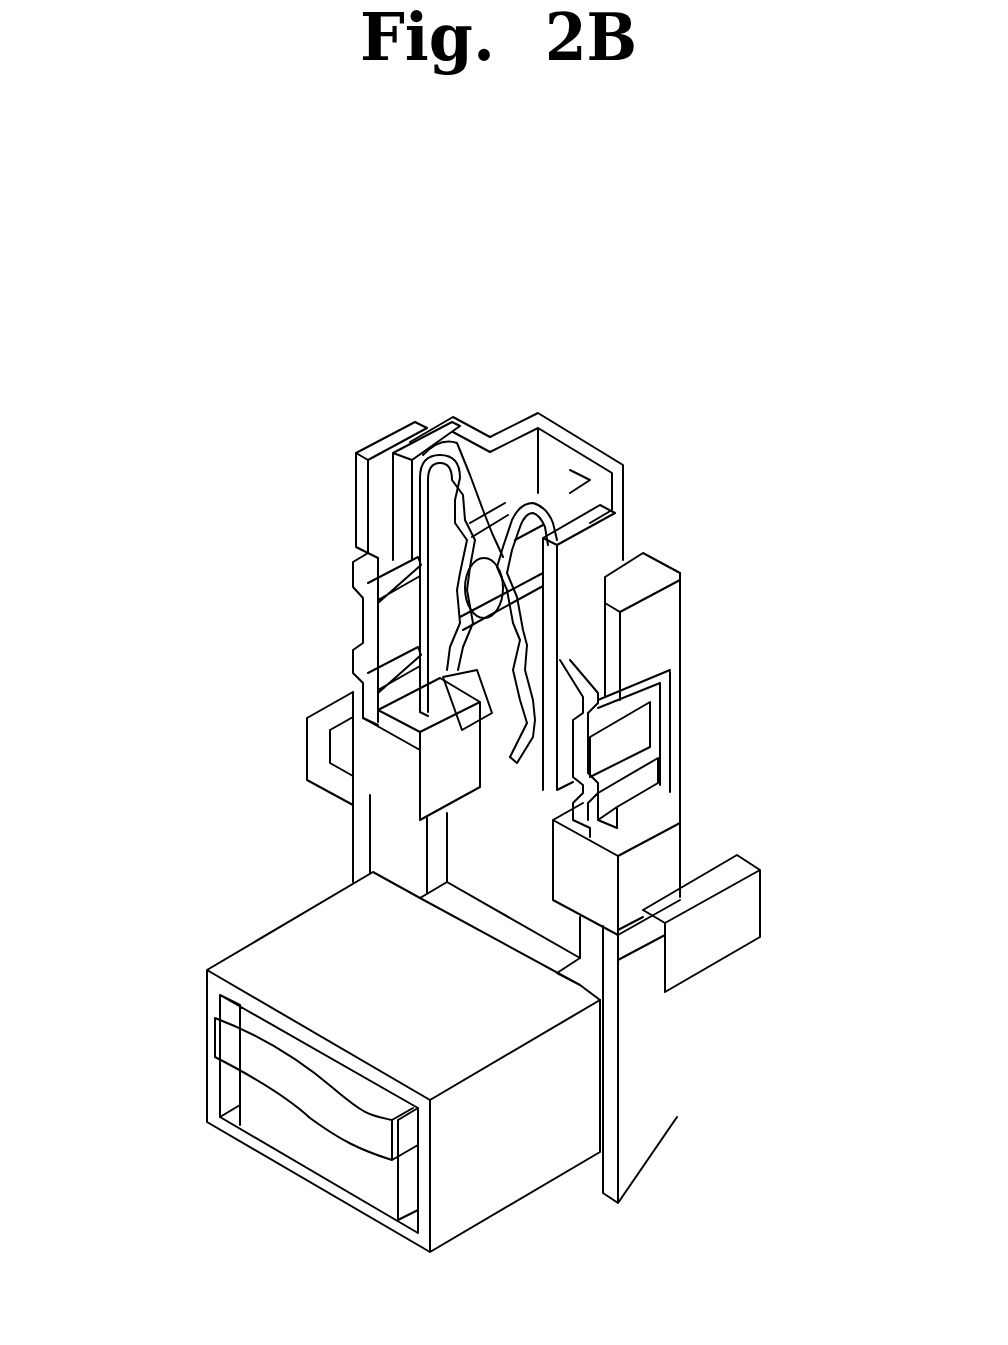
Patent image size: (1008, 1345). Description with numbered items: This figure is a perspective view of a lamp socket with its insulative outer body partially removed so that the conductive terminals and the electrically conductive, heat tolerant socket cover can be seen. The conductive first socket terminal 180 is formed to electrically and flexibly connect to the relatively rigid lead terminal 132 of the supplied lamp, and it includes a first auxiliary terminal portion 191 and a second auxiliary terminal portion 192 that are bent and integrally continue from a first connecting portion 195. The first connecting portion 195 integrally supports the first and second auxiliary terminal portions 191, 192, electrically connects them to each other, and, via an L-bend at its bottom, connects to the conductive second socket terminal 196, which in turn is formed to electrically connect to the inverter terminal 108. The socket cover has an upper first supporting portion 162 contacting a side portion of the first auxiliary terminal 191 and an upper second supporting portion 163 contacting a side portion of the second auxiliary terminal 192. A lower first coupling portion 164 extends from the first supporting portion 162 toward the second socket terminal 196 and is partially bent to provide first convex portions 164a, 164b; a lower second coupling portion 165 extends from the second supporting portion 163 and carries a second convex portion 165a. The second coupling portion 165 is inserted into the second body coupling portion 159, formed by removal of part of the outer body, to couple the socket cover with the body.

The inverter terminal 108 is at (247, 1050).
The lead terminal 132 is at (483, 580).
The second body coupling portion 159 is at (627, 558).
The first supporting portion 162 is at (400, 485).
The second supporting portion 163 is at (553, 607).
The first coupling portion 164 is at (200, 545).
The first convex portion 164a is at (362, 577).
The first convex portion 164b is at (357, 667).
The second coupling portion 165 is at (808, 700).
The second convex portion 165a is at (613, 710).
The first socket terminal 180 is at (500, 297).
The first auxiliary terminal portion 191 is at (460, 440).
The second auxiliary terminal portion 192 is at (557, 507).
The first connecting portion 195 is at (487, 852).
The second socket terminal 196 is at (297, 948).